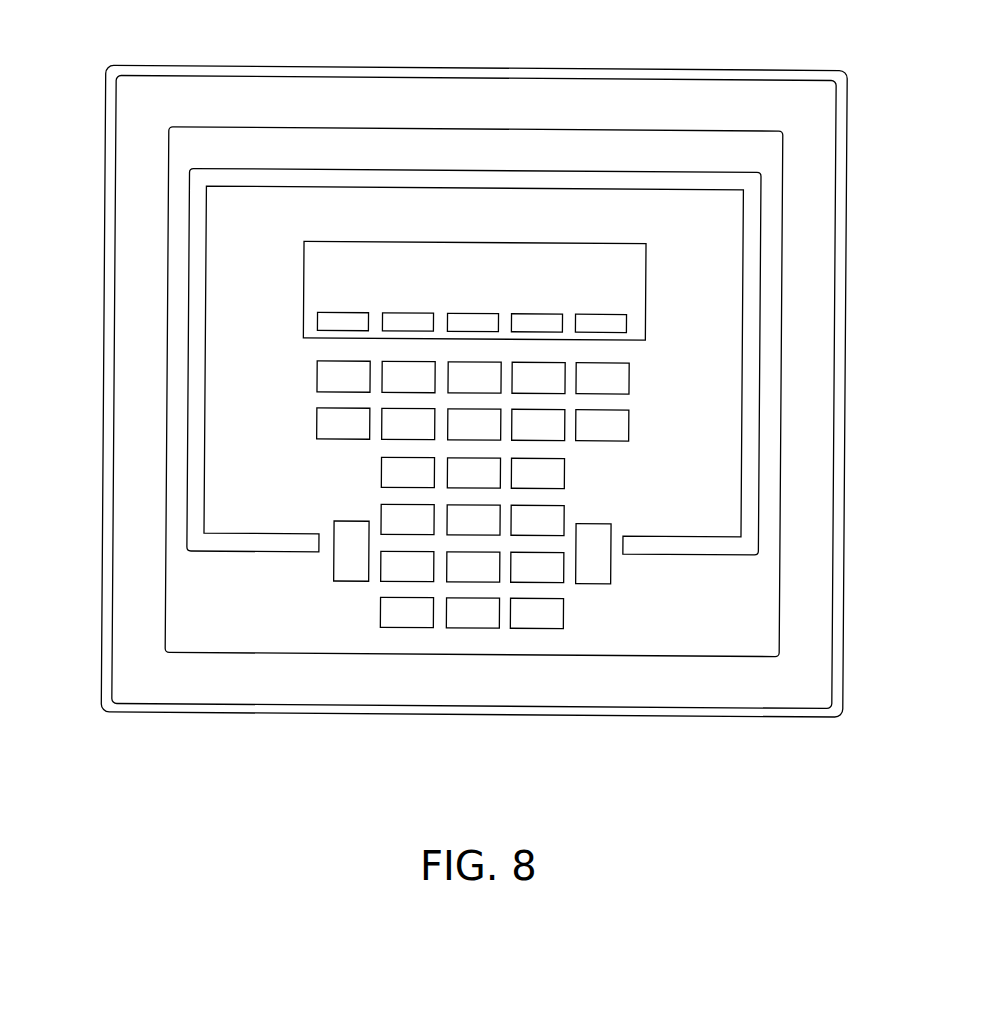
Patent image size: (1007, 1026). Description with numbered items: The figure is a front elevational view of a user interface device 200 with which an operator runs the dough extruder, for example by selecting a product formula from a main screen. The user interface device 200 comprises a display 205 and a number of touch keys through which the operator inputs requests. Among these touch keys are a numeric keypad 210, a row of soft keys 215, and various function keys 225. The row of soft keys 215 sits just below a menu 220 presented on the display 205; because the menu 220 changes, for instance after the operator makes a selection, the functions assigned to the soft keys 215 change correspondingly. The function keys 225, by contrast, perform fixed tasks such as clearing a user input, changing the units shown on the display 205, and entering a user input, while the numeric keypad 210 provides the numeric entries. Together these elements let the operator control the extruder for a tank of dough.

The user interface device 200 is at (861, 265).
The display 205 is at (362, 267).
The numeric keypad 210 is at (553, 520).
The row of soft keys 215 is at (333, 375).
The menu 220 is at (487, 322).
The function keys 225 is at (625, 422).